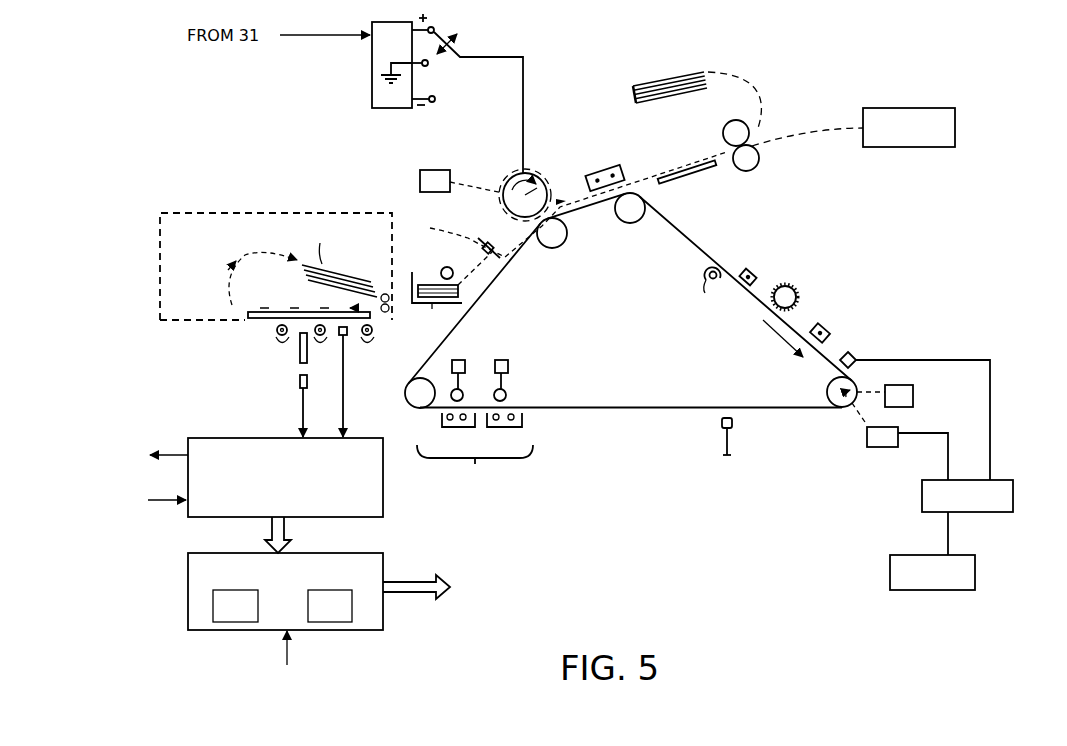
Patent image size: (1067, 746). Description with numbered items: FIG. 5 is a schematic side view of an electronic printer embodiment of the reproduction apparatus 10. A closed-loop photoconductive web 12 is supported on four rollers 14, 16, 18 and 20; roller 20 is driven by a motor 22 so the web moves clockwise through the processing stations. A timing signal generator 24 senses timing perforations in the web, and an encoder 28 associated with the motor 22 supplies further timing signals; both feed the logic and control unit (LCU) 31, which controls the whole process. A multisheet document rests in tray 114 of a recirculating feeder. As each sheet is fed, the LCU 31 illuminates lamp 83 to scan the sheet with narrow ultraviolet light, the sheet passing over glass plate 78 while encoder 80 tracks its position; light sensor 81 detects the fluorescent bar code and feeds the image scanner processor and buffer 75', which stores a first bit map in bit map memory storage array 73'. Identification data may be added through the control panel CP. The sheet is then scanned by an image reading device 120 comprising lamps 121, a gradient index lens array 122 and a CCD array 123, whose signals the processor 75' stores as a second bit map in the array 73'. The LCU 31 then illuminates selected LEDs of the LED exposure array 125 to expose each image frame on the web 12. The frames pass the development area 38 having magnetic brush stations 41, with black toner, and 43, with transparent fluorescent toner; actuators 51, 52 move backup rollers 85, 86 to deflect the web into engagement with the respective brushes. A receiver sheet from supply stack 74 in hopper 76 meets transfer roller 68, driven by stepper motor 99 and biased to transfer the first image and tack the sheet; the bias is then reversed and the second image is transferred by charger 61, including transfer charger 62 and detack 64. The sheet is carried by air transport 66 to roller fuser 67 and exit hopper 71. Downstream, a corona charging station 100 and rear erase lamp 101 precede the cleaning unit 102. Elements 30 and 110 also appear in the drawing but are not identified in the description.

The apparatus 10 is at (828, 262).
The photoconductive web 12 is at (695, 247).
The roller 14 is at (630, 223).
The roller 16 is at (552, 248).
The roller 18 is at (407, 405).
The roller 20 is at (827, 390).
The motor 22 is at (913, 395).
The timing signal generator 24 is at (845, 353).
The encoder 28 is at (877, 448).
The sensor 30 is at (828, 330).
The logic and control unit 31 is at (1013, 492).
The development area 38 is at (475, 465).
The magnetic brush development station 41 is at (459, 429).
The magnetic brush development station 43 is at (505, 429).
The actuator 51 is at (465, 365).
The actuator 52 is at (508, 365).
The charger 61 is at (605, 164).
The transfer charger 62 is at (591, 168).
The detack 64 is at (622, 184).
The air transport 66 is at (703, 178).
The roller fuser 67 is at (761, 158).
The transfer roller 68 is at (519, 171).
The exit hopper 71 is at (648, 104).
The supply stack 74 is at (426, 284).
The hopper 76 is at (432, 304).
The glass plate 78 is at (463, 262).
The encoder 80 is at (483, 242).
The light sensor 81 is at (347, 337).
The fluorescent aperture lamp 83 is at (371, 337).
The backup roller 85 is at (464, 397).
The backup roller 86 is at (507, 397).
The stepper motor 99 is at (419, 178).
The corona charging station 100 is at (753, 270).
The rear erase lamp 101 is at (700, 292).
The cleaning unit 102 is at (813, 292).
The document scanner 110 is at (205, 210).
The tray 114 is at (376, 290).
The electronic image reading device 120 is at (262, 339).
The lamps 121 is at (276, 338).
The gradient index lens array 122 is at (299, 345).
The CCD array 123 is at (299, 382).
The LED exposure array 125 is at (719, 426).
The image scanner processor and buffer 75' is at (239, 495).
The bit map memory storage array 73' is at (350, 614).
The control panel CP is at (976, 574).